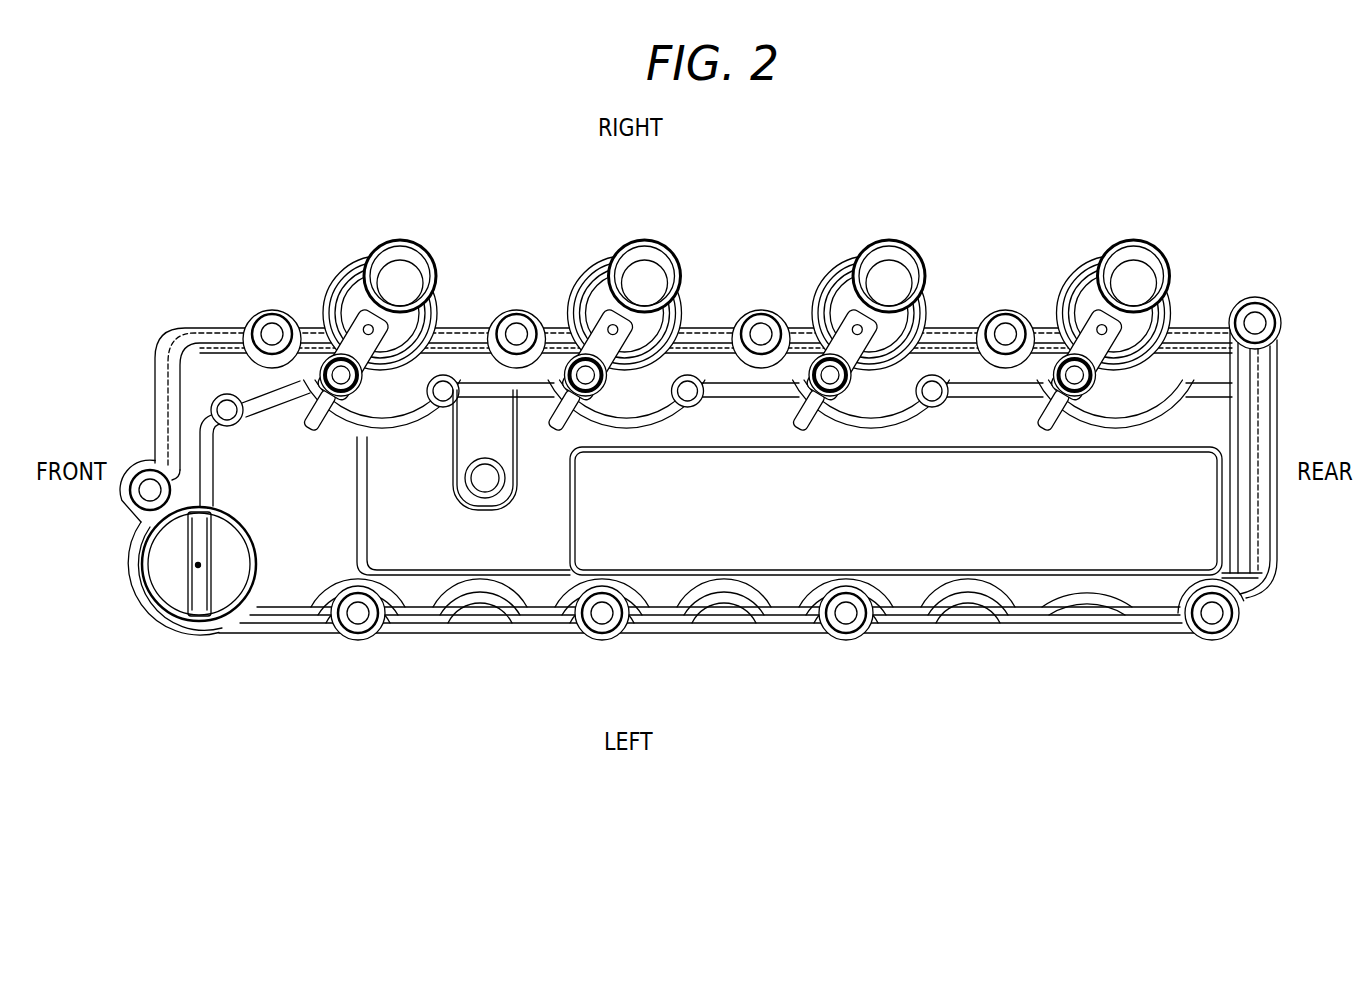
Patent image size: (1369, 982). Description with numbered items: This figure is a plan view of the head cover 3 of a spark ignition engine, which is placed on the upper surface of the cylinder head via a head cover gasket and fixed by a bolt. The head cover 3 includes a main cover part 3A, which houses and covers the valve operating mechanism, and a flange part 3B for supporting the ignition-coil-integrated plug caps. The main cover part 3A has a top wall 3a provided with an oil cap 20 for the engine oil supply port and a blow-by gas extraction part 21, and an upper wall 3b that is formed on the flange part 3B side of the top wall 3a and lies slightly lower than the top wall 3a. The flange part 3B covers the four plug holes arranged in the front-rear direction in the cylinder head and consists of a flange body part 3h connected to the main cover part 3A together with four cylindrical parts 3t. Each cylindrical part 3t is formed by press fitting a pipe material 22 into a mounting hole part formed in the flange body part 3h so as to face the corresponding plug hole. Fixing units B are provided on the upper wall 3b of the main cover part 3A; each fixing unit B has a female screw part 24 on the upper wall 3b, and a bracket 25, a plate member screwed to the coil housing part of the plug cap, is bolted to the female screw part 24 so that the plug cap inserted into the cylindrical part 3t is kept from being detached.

The head cover 3 is at (160, 328).
The main cover part 3A is at (1280, 554).
The flange part 3B is at (322, 278).
The top wall 3a is at (1045, 553).
The upper wall 3b is at (378, 410).
The flange body part 3h is at (350, 262).
The cylindrical part 3t is at (816, 233).
The oil cap 20 is at (160, 588).
The blow-by gas extraction part 21 is at (473, 424).
The pipe material 22 is at (432, 262).
The female screw part 24 is at (317, 380).
The bracket 25 is at (385, 330).
The fixing unit B is at (842, 337).